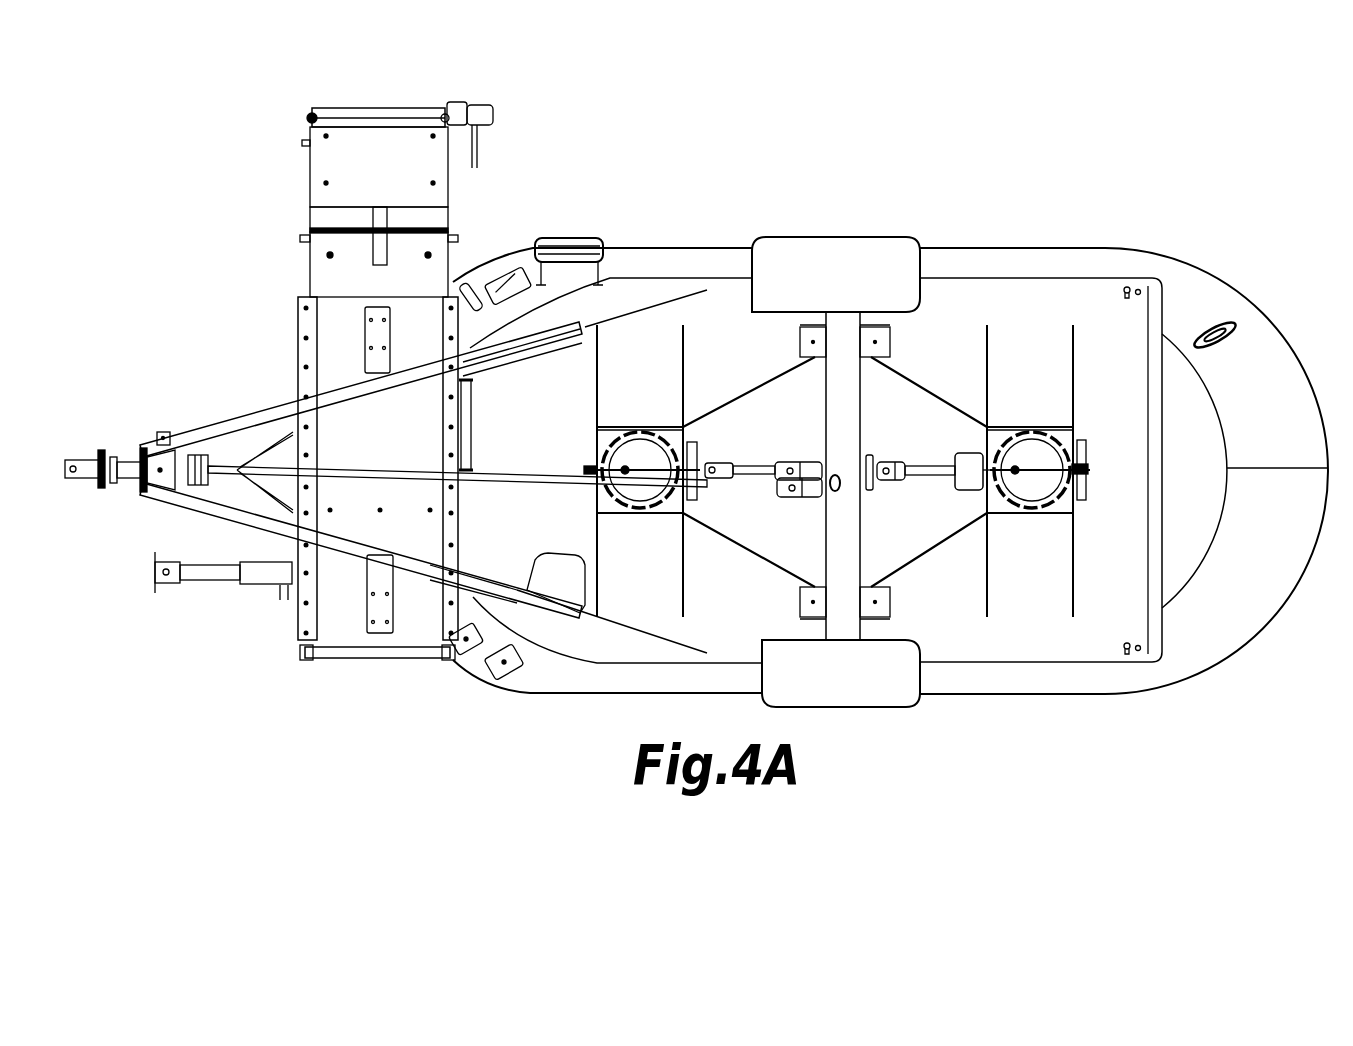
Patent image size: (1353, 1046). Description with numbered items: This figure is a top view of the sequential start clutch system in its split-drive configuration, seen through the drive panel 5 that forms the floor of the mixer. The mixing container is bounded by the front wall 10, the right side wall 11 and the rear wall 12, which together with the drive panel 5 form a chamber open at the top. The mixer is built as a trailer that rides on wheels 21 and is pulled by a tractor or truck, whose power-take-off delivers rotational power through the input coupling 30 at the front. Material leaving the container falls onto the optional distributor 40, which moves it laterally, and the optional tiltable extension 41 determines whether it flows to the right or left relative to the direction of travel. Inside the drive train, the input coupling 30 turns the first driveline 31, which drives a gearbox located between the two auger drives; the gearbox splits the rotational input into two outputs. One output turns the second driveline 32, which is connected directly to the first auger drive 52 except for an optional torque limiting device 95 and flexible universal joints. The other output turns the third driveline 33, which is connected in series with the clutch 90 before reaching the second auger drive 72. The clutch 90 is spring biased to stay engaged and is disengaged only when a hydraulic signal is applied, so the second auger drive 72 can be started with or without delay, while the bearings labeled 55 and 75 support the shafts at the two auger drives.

The drive panel 5 is at (1058, 292).
The front wall 10 is at (458, 678).
The right side wall 11 is at (1015, 248).
The rear wall 12 is at (1250, 305).
The wheels 21 is at (920, 693).
The input coupling 30 is at (80, 478).
The first driveline 31 is at (522, 475).
The second driveline 32 is at (758, 468).
The third driveline 33 is at (905, 465).
The distributor 40 is at (312, 275).
The tiltable extension 41 is at (312, 157).
The first auger drive 52 is at (640, 510).
The shaft bearing 55 is at (590, 465).
The second auger drive 72 is at (1030, 510).
The shaft bearing 75 is at (1088, 480).
The clutch 90 is at (962, 492).
The torque limiting device 95 is at (707, 500).